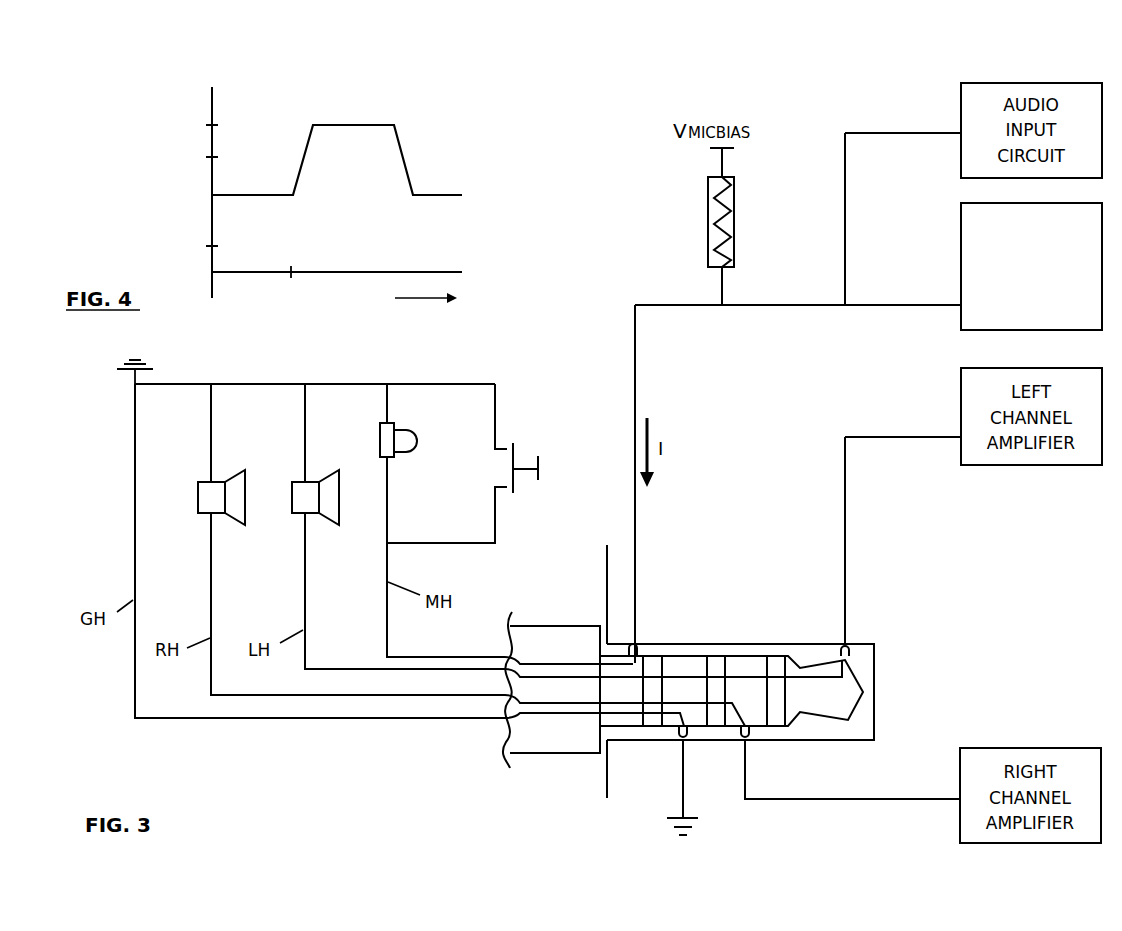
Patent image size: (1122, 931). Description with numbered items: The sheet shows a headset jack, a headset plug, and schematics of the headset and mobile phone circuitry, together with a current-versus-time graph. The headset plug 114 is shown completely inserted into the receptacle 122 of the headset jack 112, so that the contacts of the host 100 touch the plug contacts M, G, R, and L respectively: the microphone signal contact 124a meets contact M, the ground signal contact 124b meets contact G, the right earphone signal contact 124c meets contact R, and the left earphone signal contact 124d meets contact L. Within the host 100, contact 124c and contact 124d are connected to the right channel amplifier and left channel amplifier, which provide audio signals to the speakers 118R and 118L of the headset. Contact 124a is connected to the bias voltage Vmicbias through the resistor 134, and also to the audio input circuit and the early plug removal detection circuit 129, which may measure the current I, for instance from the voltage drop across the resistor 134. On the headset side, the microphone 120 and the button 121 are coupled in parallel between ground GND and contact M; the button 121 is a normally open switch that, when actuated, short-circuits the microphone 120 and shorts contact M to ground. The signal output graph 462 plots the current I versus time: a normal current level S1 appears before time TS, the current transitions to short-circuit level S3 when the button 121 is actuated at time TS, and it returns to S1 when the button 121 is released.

In FIG. 4, the signal output graph 462 is at (121, 156).
In FIG. 3, the right speaker 118R is at (198, 513).
In FIG. 3, the left speaker 118L is at (292, 513).
In FIG. 3, the microphone 120 is at (418, 437).
In FIG. 3, the button 121 is at (538, 475).
In FIG. 3, the resistor 134 is at (708, 233).
In FIG. 3, the early plug removal detection circuit 129 is at (960, 252).
In FIG. 3, the host 100 is at (783, 703).
In FIG. 3, the headset jack 112 is at (875, 693).
In FIG. 3, the headset plug 114 is at (551, 670).
In FIG. 3, the receptacle 122 is at (811, 658).
In FIG. 3, the microphone signal contact 124a is at (633, 650).
In FIG. 3, the ground signal contact 124b is at (680, 740).
In FIG. 3, the right earphone signal contact 124c is at (748, 742).
In FIG. 3, the left earphone signal contact 124d is at (847, 640).